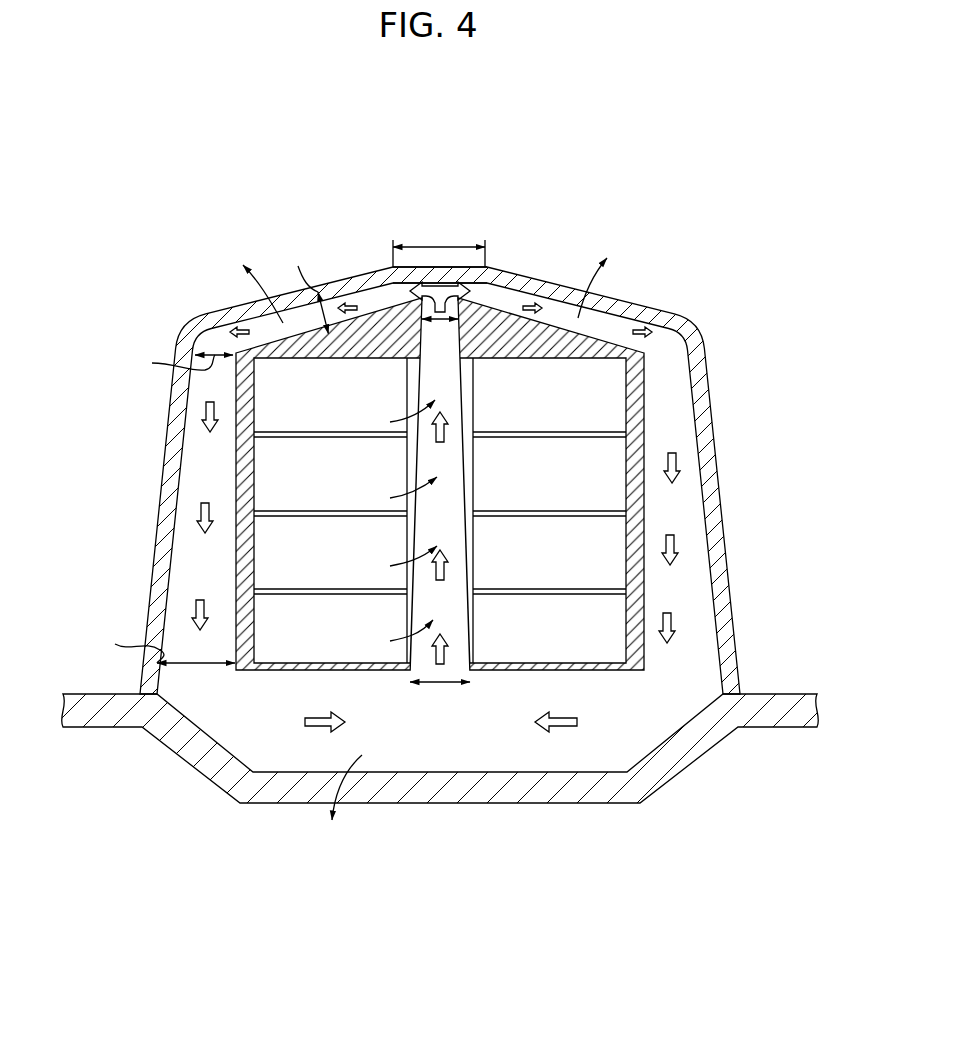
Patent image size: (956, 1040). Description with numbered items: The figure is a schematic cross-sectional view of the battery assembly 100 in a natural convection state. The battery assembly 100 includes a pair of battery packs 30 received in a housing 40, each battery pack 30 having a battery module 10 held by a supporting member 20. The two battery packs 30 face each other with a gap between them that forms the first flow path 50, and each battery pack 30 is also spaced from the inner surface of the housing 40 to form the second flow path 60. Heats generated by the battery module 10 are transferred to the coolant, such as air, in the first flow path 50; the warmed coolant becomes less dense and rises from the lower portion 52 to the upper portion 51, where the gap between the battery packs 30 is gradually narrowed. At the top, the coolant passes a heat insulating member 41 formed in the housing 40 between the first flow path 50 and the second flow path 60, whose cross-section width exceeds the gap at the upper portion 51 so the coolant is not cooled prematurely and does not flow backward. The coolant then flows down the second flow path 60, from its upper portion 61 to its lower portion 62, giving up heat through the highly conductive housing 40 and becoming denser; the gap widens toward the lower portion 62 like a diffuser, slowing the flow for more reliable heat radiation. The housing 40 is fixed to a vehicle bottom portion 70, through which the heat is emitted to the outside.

The battery assembly 100 is at (462, 110).
The battery module 10 is at (610, 409).
The supporting member 20 is at (692, 356).
The battery pack 30 is at (771, 333).
The housing 40 is at (555, 290).
The heat insulating member 41 is at (392, 283).
The first flow path 50 is at (440, 512).
The upper portion of the first flow path 51 is at (452, 309).
The lower portion of the first flow path 52 is at (465, 667).
The second flow path 60 is at (676, 604).
The upper portion of the second flow path 61 is at (627, 334).
The lower portion of the second flow path 62 is at (691, 661).
The vehicle bottom portion 70 is at (571, 788).